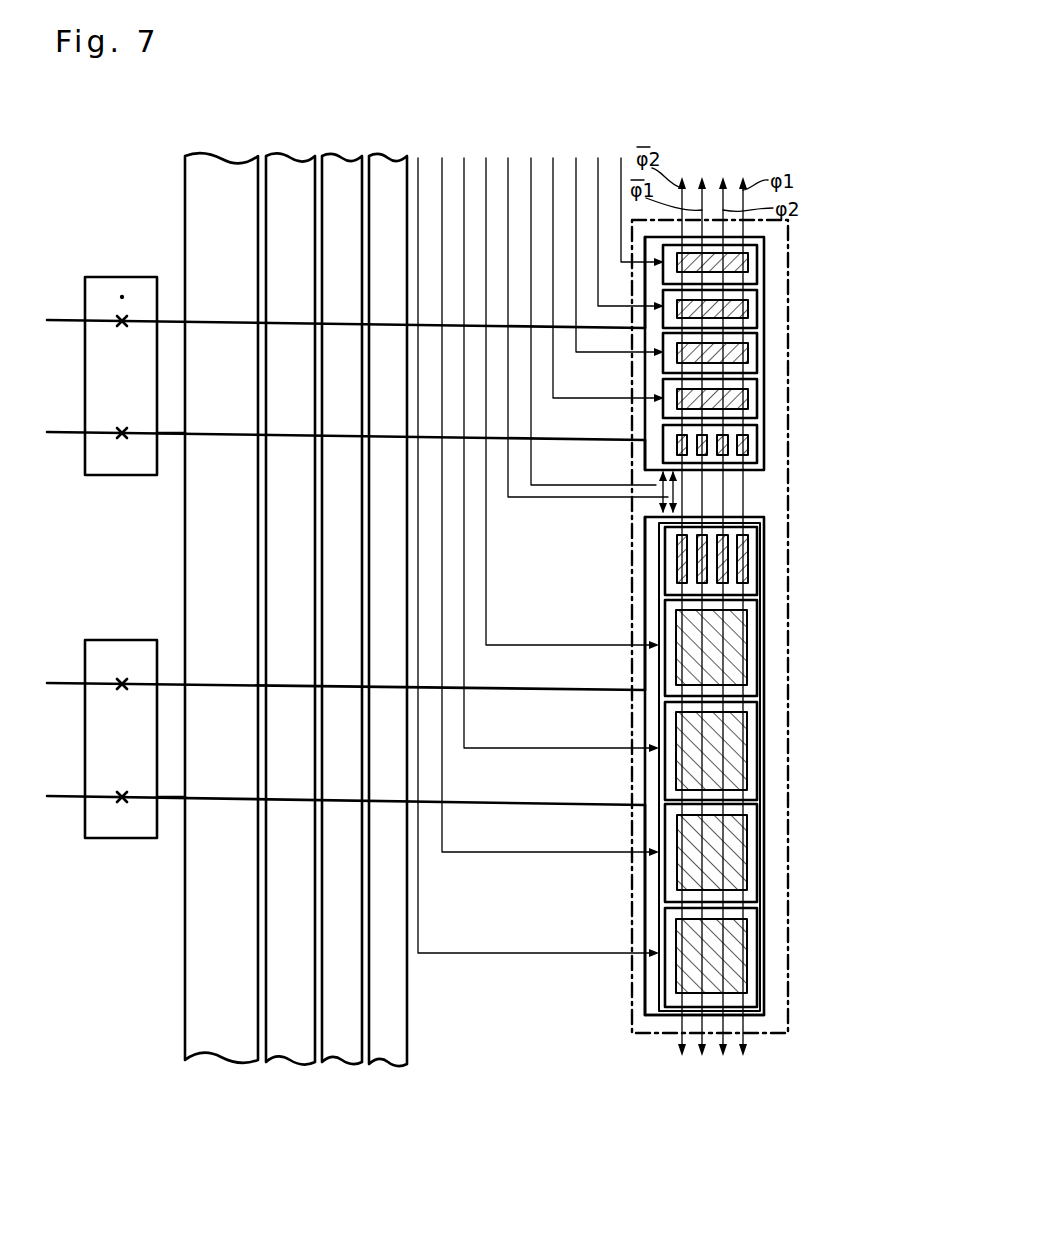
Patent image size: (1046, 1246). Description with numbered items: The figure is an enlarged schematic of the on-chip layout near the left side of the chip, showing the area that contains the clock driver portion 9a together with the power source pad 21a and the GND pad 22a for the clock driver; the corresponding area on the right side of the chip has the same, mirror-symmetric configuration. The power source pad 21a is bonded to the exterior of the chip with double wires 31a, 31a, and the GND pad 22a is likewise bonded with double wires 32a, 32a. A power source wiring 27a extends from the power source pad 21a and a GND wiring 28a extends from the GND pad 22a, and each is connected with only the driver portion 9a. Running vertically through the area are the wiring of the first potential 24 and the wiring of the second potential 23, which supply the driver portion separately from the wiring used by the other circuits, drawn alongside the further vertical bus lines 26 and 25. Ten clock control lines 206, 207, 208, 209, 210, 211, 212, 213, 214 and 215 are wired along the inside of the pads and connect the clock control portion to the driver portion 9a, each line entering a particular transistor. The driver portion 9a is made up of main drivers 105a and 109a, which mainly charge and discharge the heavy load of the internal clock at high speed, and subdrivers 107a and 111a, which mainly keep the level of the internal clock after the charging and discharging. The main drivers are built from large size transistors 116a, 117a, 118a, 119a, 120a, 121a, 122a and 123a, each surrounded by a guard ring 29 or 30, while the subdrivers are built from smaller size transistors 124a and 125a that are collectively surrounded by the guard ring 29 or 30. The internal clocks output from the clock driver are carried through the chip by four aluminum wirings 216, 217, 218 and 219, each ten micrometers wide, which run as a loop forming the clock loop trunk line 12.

The drive signal bus line 26 is at (207, 1060).
The drive signal bus line 25 is at (282, 1063).
The wiring of the second potential 23 is at (338, 1063).
The wiring of the first potential 24 is at (390, 1065).
The GND pad for the clock driver 22a is at (125, 476).
The power source pad for the clock driver 21a is at (125, 839).
The double wires 32a is at (63, 320).
The double wires 31a is at (63, 683).
The GND wiring 28a is at (172, 422).
The power source wiring 27a is at (172, 785).
The clock control line 207 is at (637, 192).
The clock control line 212 is at (626, 214).
The clock control line 209 is at (615, 237).
The clock control line 214 is at (603, 260).
The clock control line 210 is at (588, 301).
The clock control line 215 is at (583, 307).
The clock control line 206 is at (567, 383).
The clock control line 211 is at (556, 435).
The clock control line 208 is at (545, 487).
The clock control line 213 is at (533, 537).
The driver portion 9a is at (637, 1023).
The main driver 105a is at (869, 1043).
The main driver 109a is at (761, 296).
The large size transistor 117a is at (745, 263).
The large size transistor 121a is at (747, 303).
The large size transistor 119a is at (748, 352).
The large size transistor 123a is at (748, 398).
The smaller size transistor 125a is at (757, 446).
The guard ring 30 is at (767, 466).
The subdriver 107a is at (808, 596).
The subdriver 111a is at (756, 765).
The smaller size transistor 124a is at (757, 567).
The large size transistor 116a is at (740, 650).
The large size transistor 120a is at (740, 753).
The large size transistor 118a is at (740, 856).
The large size transistor 122a is at (747, 958).
The guard ring 29 is at (760, 1014).
The aluminum wiring 219 is at (682, 592).
The aluminum wiring 217 is at (702, 592).
The aluminum wiring 218 is at (723, 592).
The aluminum wiring 216 is at (743, 592).
The clock loop trunk line 12 is at (672, 130).